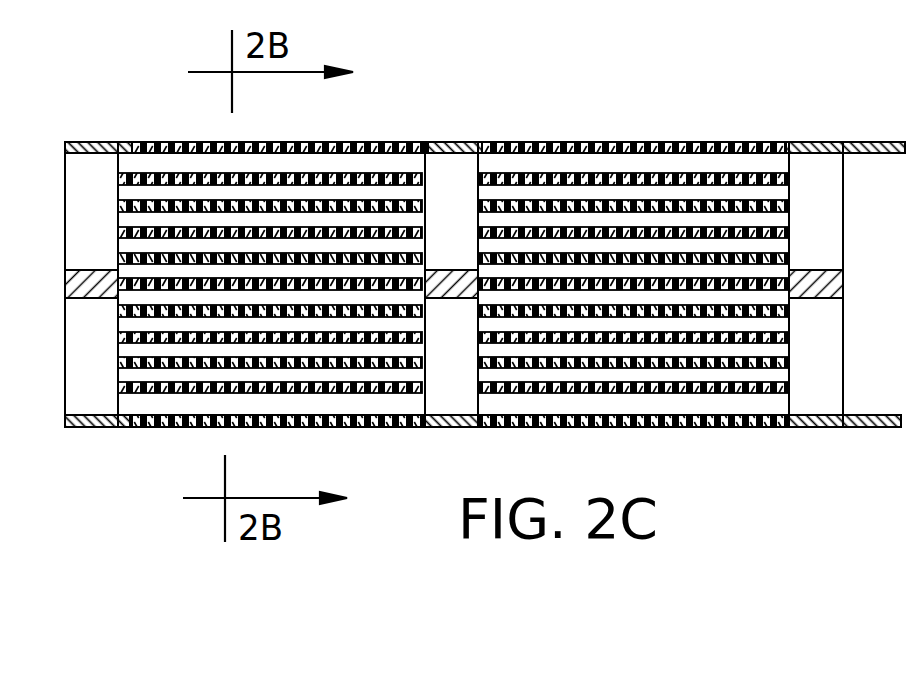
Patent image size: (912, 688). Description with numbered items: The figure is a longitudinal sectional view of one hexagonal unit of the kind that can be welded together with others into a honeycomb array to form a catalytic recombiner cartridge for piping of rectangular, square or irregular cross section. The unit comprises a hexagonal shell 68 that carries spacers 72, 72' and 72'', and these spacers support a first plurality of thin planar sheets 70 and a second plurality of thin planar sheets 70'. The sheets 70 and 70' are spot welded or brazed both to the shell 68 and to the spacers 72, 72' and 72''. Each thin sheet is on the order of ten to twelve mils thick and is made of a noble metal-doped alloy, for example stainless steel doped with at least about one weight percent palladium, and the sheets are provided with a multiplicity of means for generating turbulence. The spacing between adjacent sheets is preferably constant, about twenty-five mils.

The hexagonal shell 68 is at (630, 146).
The first plurality of thin planar sheets 70 is at (218, 283).
The second plurality of thin planar sheets 70' is at (691, 283).
The spacer 72 is at (107, 264).
The spacer 72' is at (434, 266).
The spacer 72'' is at (806, 264).